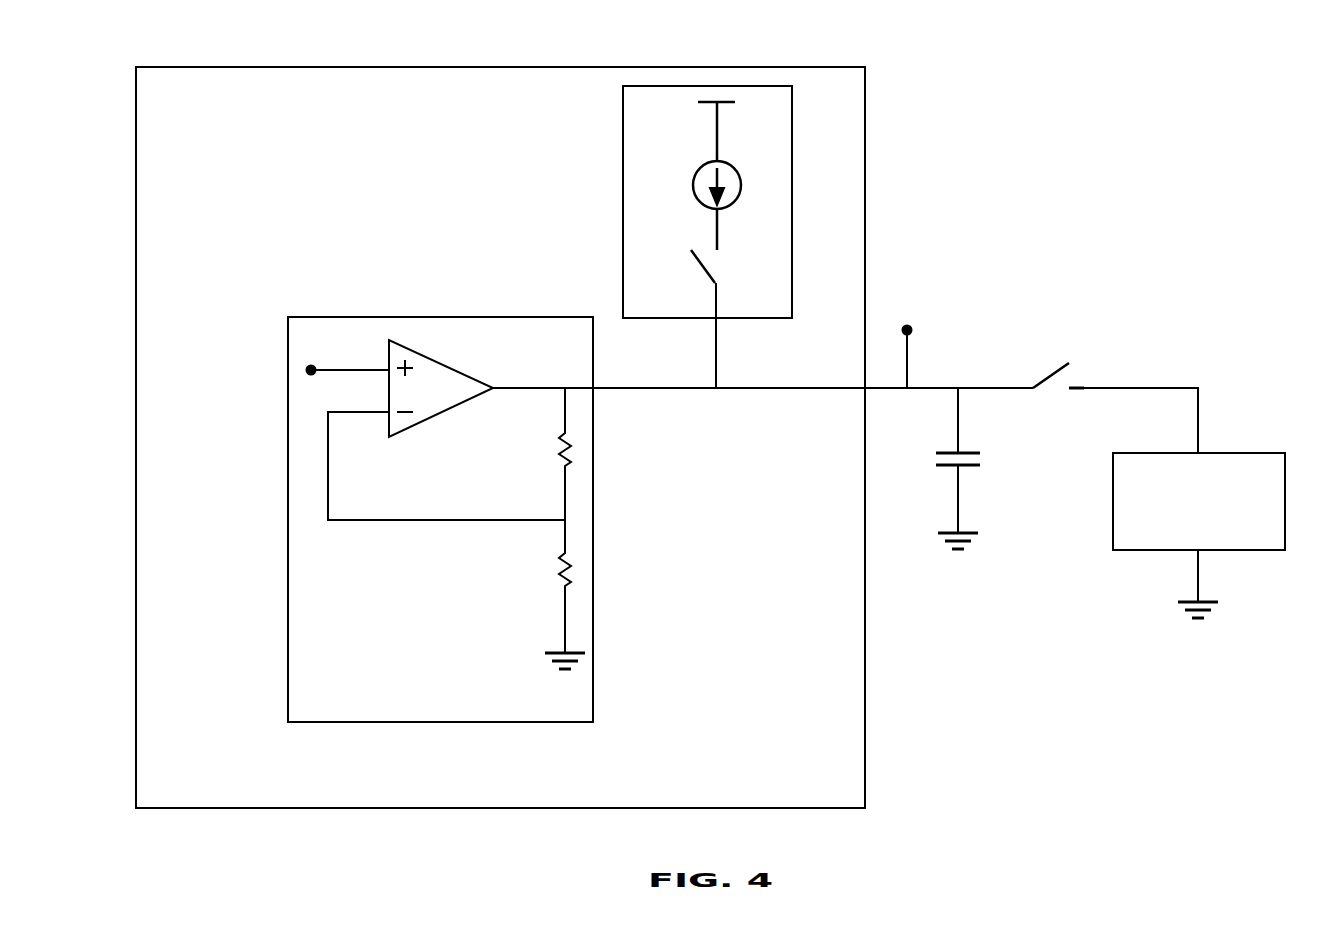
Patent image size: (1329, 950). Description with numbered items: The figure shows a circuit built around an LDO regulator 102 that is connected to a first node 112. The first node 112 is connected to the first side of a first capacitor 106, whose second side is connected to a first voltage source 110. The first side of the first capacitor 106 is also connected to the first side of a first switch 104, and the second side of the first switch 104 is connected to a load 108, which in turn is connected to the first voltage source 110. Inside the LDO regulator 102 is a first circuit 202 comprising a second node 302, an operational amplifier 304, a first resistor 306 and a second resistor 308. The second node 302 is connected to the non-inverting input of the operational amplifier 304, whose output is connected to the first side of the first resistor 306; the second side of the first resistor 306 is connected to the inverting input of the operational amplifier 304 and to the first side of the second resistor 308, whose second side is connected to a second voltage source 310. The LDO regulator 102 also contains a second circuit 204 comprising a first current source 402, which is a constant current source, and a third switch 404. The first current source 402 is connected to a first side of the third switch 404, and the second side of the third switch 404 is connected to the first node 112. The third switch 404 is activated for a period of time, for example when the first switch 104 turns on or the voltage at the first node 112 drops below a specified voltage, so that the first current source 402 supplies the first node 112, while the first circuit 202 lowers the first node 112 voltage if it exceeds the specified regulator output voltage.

The LDO regulator 102 is at (440, 67).
The first switch 104 is at (1048, 375).
The first capacitor 106 is at (978, 452).
The load 108 is at (1226, 453).
The first voltage source 110 is at (956, 549).
The first node 112 is at (907, 330).
The first circuit 202 is at (466, 317).
The second circuit 204 is at (623, 240).
The second node 302 is at (311, 370).
The operational amplifier 304 is at (437, 418).
The first resistor 306 is at (566, 455).
The second resistor 308 is at (566, 575).
The second voltage source 310 is at (562, 668).
The first current source 402 is at (738, 167).
The third switch 404 is at (712, 272).